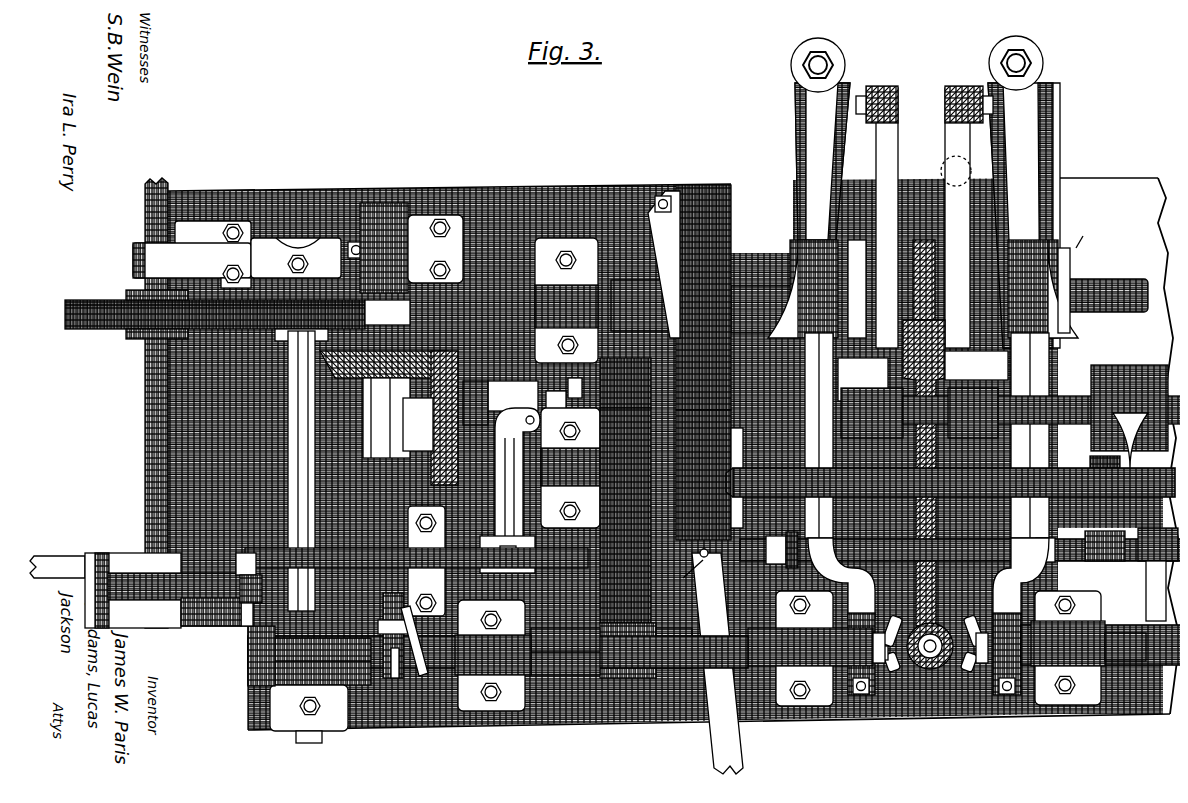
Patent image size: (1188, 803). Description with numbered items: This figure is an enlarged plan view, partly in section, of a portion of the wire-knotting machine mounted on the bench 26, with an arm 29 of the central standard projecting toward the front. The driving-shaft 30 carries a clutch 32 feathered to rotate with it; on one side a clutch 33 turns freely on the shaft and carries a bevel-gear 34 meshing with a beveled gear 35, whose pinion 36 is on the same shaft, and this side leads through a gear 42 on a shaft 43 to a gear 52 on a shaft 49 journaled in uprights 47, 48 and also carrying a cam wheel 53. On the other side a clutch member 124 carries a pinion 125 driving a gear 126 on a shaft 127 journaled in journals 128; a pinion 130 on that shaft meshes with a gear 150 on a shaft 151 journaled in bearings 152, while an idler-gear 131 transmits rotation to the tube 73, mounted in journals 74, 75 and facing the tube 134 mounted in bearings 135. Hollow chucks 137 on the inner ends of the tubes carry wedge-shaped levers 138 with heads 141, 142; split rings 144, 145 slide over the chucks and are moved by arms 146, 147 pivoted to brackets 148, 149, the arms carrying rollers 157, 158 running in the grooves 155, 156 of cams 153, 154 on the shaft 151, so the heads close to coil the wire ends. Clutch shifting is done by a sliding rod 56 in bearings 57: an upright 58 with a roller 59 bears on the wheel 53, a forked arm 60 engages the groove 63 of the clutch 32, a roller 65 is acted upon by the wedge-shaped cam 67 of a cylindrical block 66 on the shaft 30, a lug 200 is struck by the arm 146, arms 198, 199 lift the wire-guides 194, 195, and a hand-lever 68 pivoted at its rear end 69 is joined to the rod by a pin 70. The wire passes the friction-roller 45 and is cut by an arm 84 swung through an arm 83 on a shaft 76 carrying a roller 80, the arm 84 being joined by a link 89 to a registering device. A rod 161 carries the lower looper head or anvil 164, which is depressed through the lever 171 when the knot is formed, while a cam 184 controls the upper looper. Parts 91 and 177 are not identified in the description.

The bench or table 26 is at (1100, 247).
The arm 29 is at (930, 563).
The driving-shaft 30 is at (1072, 395).
The clutch 32 is at (513, 396).
The clutch 33 is at (475, 403).
The bevel-gear 34 is at (428, 450).
The beveled gear 35 is at (389, 407).
The pinion 36 is at (411, 261).
The gear 42 is at (273, 330).
The shaft 43 is at (674, 454).
The friction-roller 45 is at (242, 680).
The upright 47 is at (125, 251).
The upright 48 is at (165, 620).
The shaft 49 is at (137, 214).
The gear 52 is at (70, 323).
The wheel 53 is at (140, 585).
The sliding rod 56 is at (885, 545).
The bearings 57 is at (416, 561).
The upright 58 is at (232, 552).
The roller 59 is at (252, 552).
The forked arm 60 is at (510, 490).
The circumferential groove 63 is at (543, 378).
The roller 65 is at (1084, 455).
The cylindrical block 66 is at (1122, 365).
The cam projection 67 is at (1130, 438).
The hand-lever 68 is at (712, 705).
The rear end of hand-lever 69 is at (652, 183).
The pin 70 is at (680, 575).
The tube 73 is at (553, 650).
The journal 74 is at (493, 655).
The journal 75 is at (810, 648).
The shaft 76 is at (258, 610).
The roller 80 is at (248, 600).
The arm 83 is at (375, 590).
The cutting arm 84 is at (385, 670).
The link 89 is at (400, 668).
The bar 91 is at (60, 548).
The clutch member 124 is at (570, 406).
The pinion 125 is at (625, 377).
The gear 126 is at (625, 515).
The shaft 127 is at (950, 482).
The journals 128 is at (570, 468).
The pinion 130 is at (732, 475).
The idler-gear 131 is at (674, 633).
The tube 134 is at (1125, 634).
The bearings 135 is at (627, 670).
The heads or chucks 137 is at (870, 660).
The levers 138 is at (870, 610).
The head 141 is at (930, 670).
The head 142 is at (933, 642).
The split ring 144 is at (848, 690).
The split ring 145 is at (1005, 690).
The arm 146 is at (823, 435).
The arm 147 is at (1033, 435).
The bracket 148 is at (790, 150).
The bracket 149 is at (1042, 150).
The gear 150 is at (705, 180).
The shaft 151 is at (879, 306).
The bearings 152 is at (566, 300).
The cam 153 is at (795, 232).
The cam 154 is at (1040, 238).
The cam-groove 155 is at (851, 288).
The cam-groove 156 is at (1030, 235).
The roller 157 is at (782, 245).
The roller 158 is at (1064, 236).
The rod 161 is at (926, 665).
The lower looper head or anvil 164 is at (1100, 525).
The lever 171 is at (886, 225).
The pin 177 is at (940, 615).
The cam 184 is at (945, 240).
The guide 194 is at (580, 665).
The guide 195 is at (1150, 660).
The arm 198 is at (700, 668).
The arm 199 is at (1140, 590).
The lug 200 is at (777, 536).